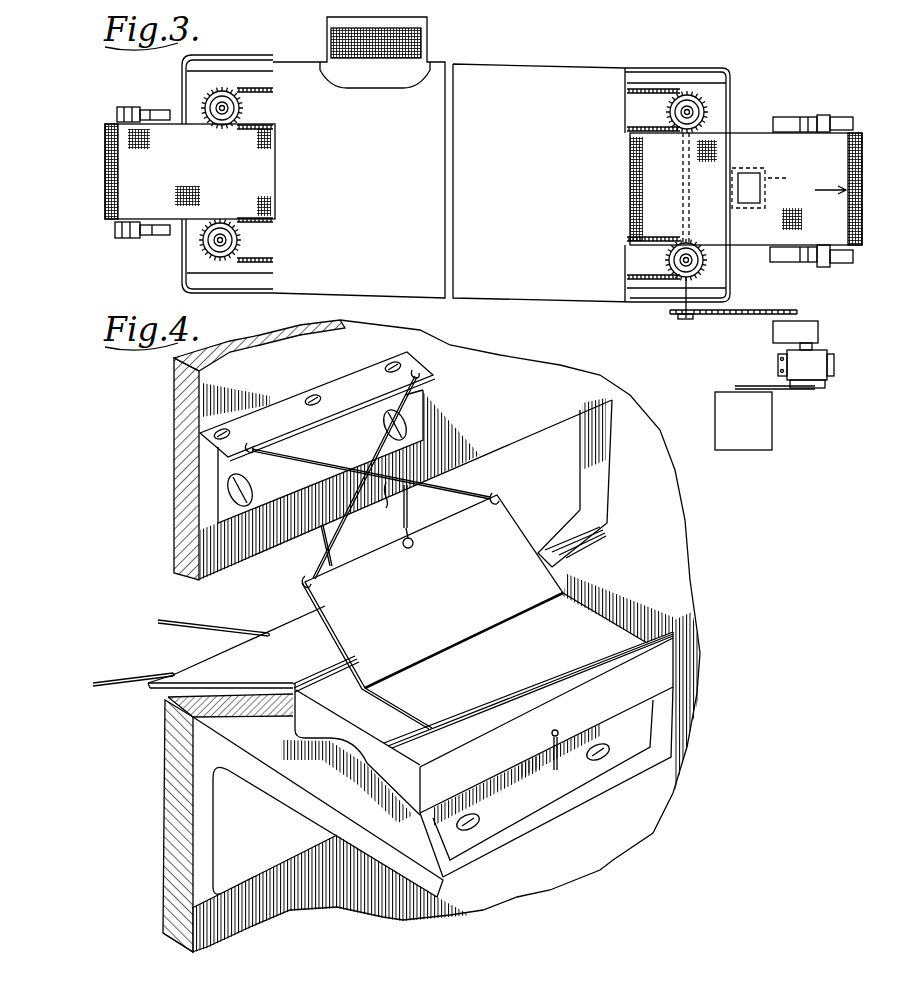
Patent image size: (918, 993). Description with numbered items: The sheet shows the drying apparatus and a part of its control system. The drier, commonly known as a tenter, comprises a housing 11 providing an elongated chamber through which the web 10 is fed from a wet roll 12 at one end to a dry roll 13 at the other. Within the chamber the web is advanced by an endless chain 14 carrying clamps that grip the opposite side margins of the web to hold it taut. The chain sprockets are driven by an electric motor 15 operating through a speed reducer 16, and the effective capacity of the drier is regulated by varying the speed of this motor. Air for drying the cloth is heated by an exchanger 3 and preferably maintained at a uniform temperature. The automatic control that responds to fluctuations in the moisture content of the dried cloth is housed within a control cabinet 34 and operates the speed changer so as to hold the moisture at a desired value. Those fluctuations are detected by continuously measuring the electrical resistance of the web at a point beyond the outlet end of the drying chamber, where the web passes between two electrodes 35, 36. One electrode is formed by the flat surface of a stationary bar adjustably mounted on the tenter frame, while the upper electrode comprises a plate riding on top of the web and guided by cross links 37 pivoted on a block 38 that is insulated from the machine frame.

In FIG. 3, the exchanger 3 is at (415, 44).
In FIG. 3, the web 10 is at (152, 132).
In FIG. 3, the housing 11 is at (250, 62).
In FIG. 4, the housing 11 is at (182, 535).
In FIG. 3, the wet roll 12 is at (116, 243).
In FIG. 3, the dry roll 13 is at (824, 253).
In FIG. 3, the endless chain 14 is at (661, 137).
In FIG. 3, the electric motor 15 is at (790, 362).
In FIG. 3, the speed reducer 16 is at (815, 333).
In FIG. 3, the control cabinet 34 is at (765, 418).
In FIG. 3, the electrode 35 is at (789, 180).
In FIG. 4, the electrode 35 is at (348, 709).
In FIG. 3, the electrode 36 is at (756, 178).
In FIG. 4, the electrode 36 is at (413, 703).
In FIG. 4, the cross links 37 is at (345, 519).
In FIG. 4, the block 38 is at (283, 407).